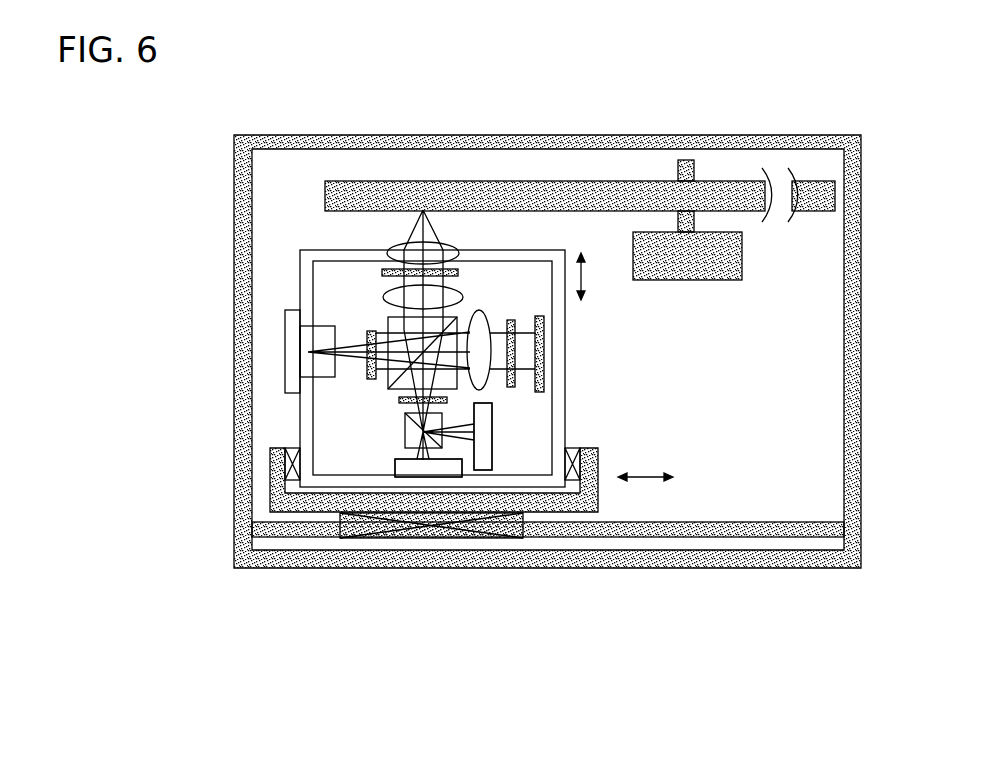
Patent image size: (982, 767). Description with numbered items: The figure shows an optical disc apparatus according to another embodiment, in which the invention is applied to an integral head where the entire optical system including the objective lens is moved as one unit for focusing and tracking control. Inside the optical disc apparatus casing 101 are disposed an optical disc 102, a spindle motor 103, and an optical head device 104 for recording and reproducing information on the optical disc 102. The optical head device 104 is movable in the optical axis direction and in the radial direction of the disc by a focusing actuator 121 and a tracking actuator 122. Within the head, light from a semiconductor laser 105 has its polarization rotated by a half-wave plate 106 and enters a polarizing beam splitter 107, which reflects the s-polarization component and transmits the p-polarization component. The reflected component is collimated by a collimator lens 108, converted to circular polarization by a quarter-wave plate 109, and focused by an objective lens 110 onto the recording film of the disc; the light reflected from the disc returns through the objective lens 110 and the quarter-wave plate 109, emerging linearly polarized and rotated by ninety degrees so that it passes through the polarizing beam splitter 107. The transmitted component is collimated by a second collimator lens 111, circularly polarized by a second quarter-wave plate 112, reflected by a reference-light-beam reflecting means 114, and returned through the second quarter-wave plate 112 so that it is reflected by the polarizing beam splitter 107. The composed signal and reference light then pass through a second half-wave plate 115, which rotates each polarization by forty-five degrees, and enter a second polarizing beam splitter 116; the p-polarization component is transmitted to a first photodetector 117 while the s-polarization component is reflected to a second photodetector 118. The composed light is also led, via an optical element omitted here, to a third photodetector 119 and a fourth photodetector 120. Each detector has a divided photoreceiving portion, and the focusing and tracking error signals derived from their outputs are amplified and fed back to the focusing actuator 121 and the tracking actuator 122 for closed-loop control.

The optical disc apparatus casing 101 is at (311, 135).
The optical disc 102 is at (562, 180).
The spindle motor 103 is at (742, 255).
The optical head device 104 is at (565, 325).
The semiconductor laser 105 is at (285, 368).
The λ/2 plate 106 is at (370, 330).
The polarizing beam splitter 107 is at (388, 383).
The collimator lens 108 is at (457, 297).
The λ/4 plate 109 is at (382, 273).
The objective lens 110 is at (392, 250).
The second collimator lens 111 is at (490, 320).
The second λ/4 plate 112 is at (517, 320).
The reference-light-beam reflecting means 114 is at (544, 372).
The second λ/2 plate 115 is at (399, 400).
The second polarizing beam splitter 116 is at (405, 430).
The first photodetector 117 is at (393, 463).
The second photodetector 118 is at (492, 432).
The third photodetector 119 is at (428, 468).
The fourth photodetector 120 is at (483, 436).
The focusing actuator 121 is at (572, 490).
The tracking actuator 122 is at (437, 540).